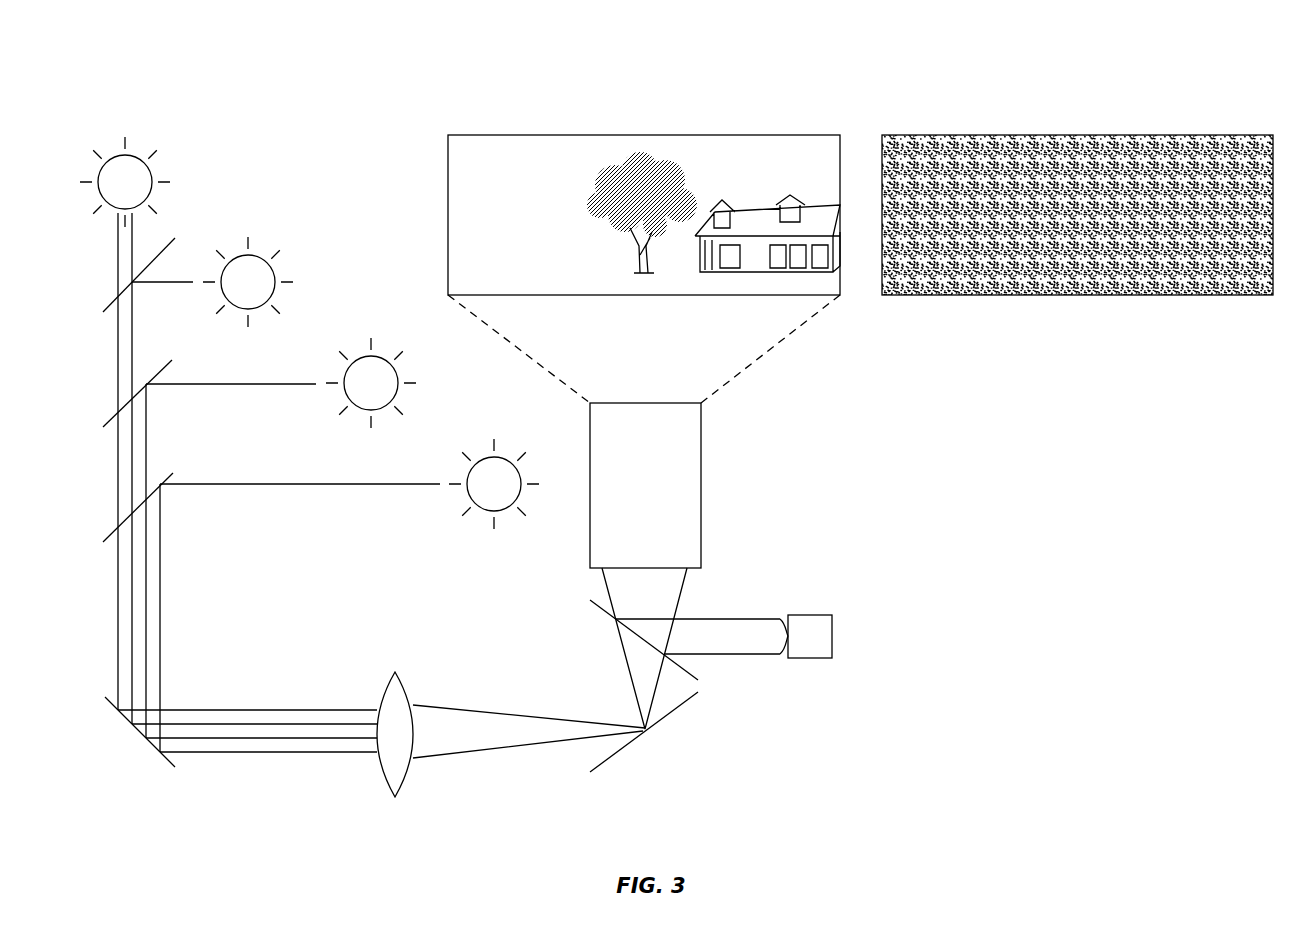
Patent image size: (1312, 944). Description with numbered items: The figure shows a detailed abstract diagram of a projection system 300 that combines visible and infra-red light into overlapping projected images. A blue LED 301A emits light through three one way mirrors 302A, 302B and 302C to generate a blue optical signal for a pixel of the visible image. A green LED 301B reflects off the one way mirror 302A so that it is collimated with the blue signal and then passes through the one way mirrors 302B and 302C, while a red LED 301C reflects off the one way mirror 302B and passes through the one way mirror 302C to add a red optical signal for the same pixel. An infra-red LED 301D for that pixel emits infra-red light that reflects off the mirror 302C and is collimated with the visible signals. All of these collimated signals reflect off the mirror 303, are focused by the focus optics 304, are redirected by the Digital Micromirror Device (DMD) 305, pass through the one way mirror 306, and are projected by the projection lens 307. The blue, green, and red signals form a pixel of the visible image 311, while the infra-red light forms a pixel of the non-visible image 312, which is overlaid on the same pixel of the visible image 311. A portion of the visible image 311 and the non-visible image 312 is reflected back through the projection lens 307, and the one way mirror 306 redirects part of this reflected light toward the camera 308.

The projection system 300 is at (629, 35).
The blue LED 301A is at (152, 171).
The green LED 301B is at (272, 270).
The red LED 301C is at (398, 373).
The infra-red LED 301D is at (513, 464).
The one way mirror 302A is at (176, 240).
The one way mirror 302B is at (173, 362).
The one way mirror 302C is at (168, 476).
The mirror 303 is at (148, 742).
The focus optics 304 is at (405, 690).
The Digital Micromirror Device (DMD) 305 is at (680, 705).
The one way mirror 306 is at (602, 608).
The projection lens 307 is at (630, 521).
The camera 308 is at (812, 615).
The visible image 311 is at (790, 135).
The non-visible image 312 is at (1222, 135).